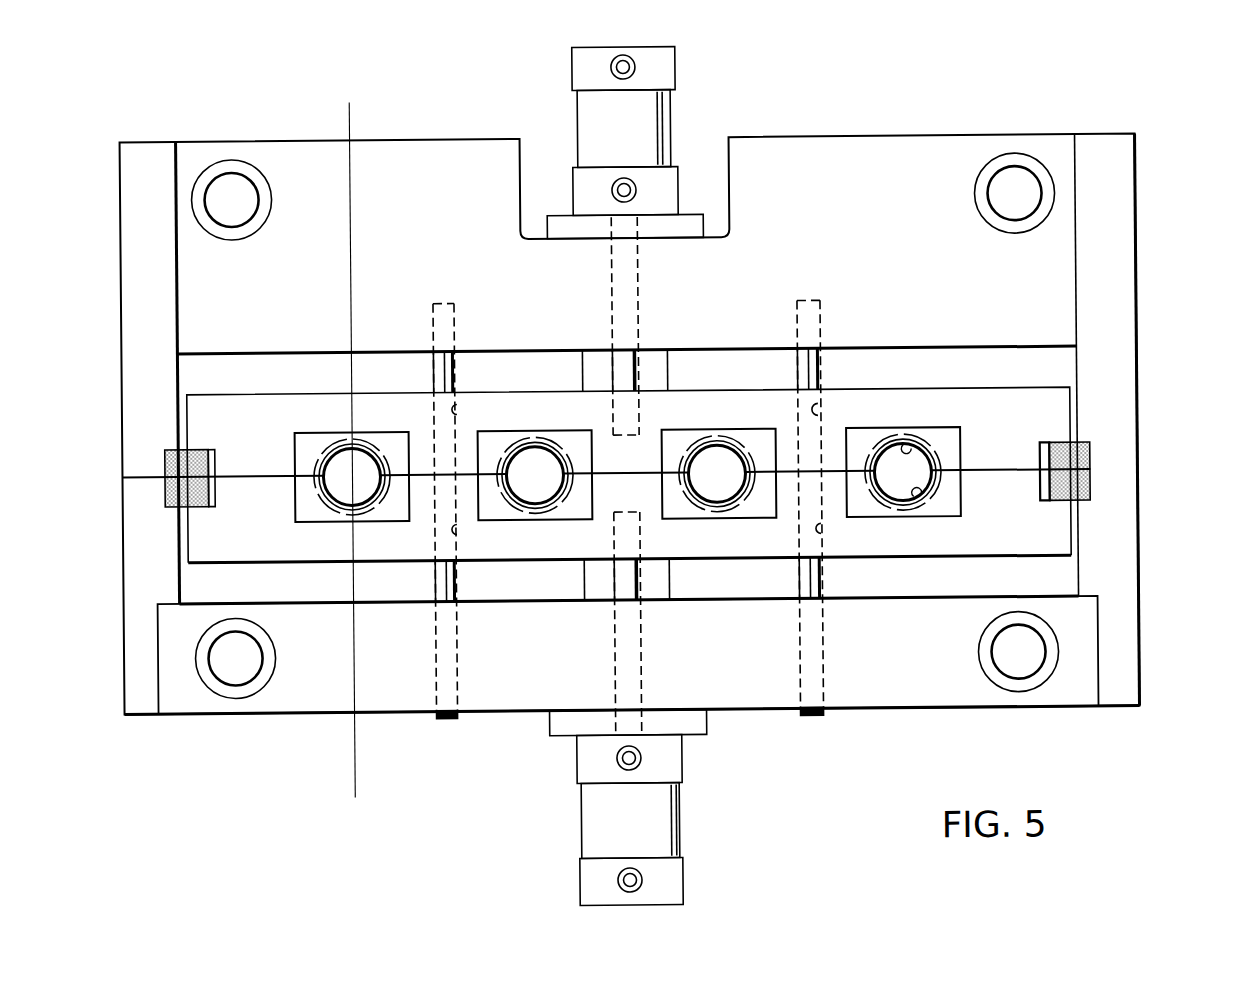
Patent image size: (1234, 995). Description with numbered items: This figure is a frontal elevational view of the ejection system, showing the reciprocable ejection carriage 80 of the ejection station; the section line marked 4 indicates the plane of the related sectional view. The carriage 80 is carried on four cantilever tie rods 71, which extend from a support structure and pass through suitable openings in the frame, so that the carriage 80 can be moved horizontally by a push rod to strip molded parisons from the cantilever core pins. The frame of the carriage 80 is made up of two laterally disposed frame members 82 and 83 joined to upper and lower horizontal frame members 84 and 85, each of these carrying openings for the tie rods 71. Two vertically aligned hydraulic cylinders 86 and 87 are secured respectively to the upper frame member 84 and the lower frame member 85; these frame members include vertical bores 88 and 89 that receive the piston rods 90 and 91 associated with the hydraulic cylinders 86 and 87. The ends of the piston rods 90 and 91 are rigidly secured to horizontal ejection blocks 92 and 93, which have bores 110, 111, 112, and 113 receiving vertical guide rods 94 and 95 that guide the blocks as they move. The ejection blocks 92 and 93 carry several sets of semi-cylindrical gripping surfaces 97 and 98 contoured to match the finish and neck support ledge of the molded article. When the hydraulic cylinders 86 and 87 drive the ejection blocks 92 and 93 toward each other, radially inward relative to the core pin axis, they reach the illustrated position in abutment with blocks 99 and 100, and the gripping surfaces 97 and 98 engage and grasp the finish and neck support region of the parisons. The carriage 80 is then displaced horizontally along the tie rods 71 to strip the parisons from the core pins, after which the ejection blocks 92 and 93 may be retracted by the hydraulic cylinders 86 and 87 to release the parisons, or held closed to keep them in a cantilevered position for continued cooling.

The section line 4- 4 is at (352, 103).
The cantilever tie rods 71 is at (257, 194).
The ejection carriage 80 is at (1151, 322).
The lateral frame member 82 is at (122, 373).
The lateral frame member 83 is at (1128, 277).
The upper horizontal frame member 84 is at (993, 302).
The lower horizontal frame member 85 is at (862, 671).
The hydraulic cylinder 86 is at (673, 74).
The hydraulic cylinder 87 is at (659, 828).
The vertical bore 88 is at (631, 297).
The vertical bore 89 is at (641, 662).
The piston rod 90 is at (668, 365).
The piston rod 91 is at (668, 577).
The horizontal ejection block 92 is at (1017, 432).
The horizontal ejection block 93 is at (1019, 537).
The vertical guide rod 94 is at (457, 371).
The vertical guide rod 95 is at (821, 369).
The semi-cylindrical gripping surface 97 is at (911, 446).
The semi-cylindrical gripping surface 98 is at (921, 497).
The block 99 is at (122, 473).
The block 100 is at (1090, 473).
The bore 110 is at (822, 532).
The bore 111 is at (820, 405).
The bore 112 is at (459, 407).
The bore 113 is at (457, 530).